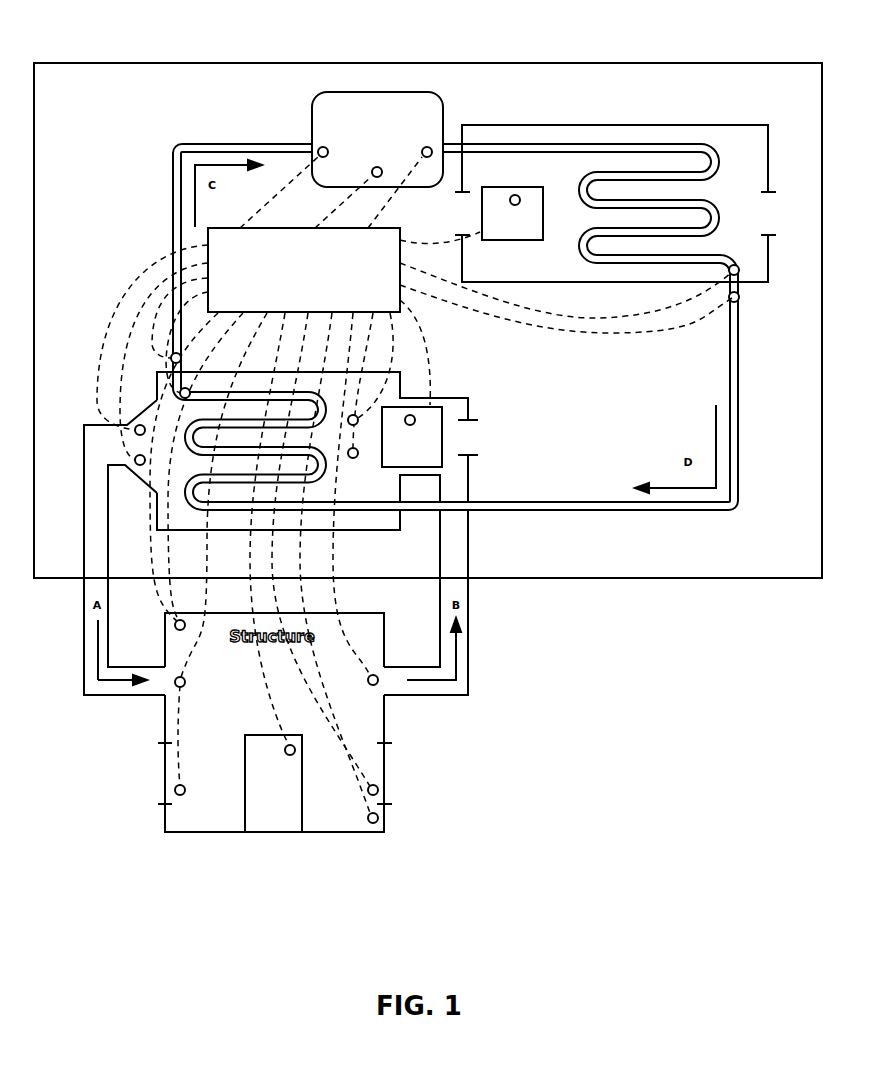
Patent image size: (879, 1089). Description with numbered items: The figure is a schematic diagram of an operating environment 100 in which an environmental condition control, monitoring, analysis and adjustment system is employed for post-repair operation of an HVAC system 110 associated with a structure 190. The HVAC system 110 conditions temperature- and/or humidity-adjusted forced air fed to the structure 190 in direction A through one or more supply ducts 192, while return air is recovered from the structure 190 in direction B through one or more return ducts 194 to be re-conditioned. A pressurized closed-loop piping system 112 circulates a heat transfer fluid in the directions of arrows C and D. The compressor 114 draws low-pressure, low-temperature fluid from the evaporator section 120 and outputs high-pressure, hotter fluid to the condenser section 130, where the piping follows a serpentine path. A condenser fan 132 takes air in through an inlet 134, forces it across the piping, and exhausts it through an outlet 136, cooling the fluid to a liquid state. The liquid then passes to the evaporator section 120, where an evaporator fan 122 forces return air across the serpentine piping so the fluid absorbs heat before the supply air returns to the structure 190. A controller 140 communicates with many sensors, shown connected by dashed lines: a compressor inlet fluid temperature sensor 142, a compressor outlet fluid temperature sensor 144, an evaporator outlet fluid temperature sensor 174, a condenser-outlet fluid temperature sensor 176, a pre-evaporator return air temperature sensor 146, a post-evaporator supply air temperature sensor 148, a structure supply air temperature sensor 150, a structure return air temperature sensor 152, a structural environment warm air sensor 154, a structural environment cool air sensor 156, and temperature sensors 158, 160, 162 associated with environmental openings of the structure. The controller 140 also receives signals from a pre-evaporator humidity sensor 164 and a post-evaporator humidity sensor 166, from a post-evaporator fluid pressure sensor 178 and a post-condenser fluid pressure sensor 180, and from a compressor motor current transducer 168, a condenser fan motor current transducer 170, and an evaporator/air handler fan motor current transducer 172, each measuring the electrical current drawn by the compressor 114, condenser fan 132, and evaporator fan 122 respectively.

The operating environment 100 is at (66, 33).
The HVAC system 110 is at (428, 320).
The pressurized closed-loop piping system 112 is at (172, 222).
The compressor 114 is at (377, 139).
The evaporator section 120 is at (460, 397).
The evaporator fan 122 is at (443, 440).
The condenser section 130 is at (590, 283).
The condenser fan 132 is at (513, 241).
The inlet 134 is at (481, 213).
The outlet 136 is at (781, 213).
The controller 140 is at (304, 270).
The compressor inlet fluid temperature sensor 142 is at (318, 148).
The compressor outlet fluid temperature sensor 144 is at (431, 148).
The pre-evaporator return air temperature sensor 146 is at (358, 417).
The post-evaporator supply air temperature sensor 148 is at (134, 427).
The structure supply air temperature sensor 150 is at (176, 686).
The structure return air temperature sensor 152 is at (402, 701).
The structural environment warm air sensor 154 is at (176, 628).
The structural environment cool air sensor 156 is at (379, 818).
The temperature sensor 158 is at (379, 789).
The temperature sensor 160 is at (412, 773).
The temperature sensor 162 is at (175, 790).
The pre-evaporator humidity sensor 164 is at (353, 459).
The post-evaporator humidity sensor 166 is at (134, 459).
The compressor motor current transducer 168 is at (372, 176).
The condenser fan motor current transducer 170 is at (512, 196).
The evaporator/air handler fan motor current transducer 172 is at (416, 421).
The evaporator outlet fluid temperature sensor 174 is at (180, 391).
The condenser-outlet fluid temperature sensor 176 is at (739, 276).
The post-evaporator fluid pressure sensor 178 is at (171, 356).
The post-condenser fluid pressure sensor 180 is at (729, 301).
The structure 190 is at (248, 783).
The supply duct 192 is at (83, 632).
The return duct 194 is at (469, 638).